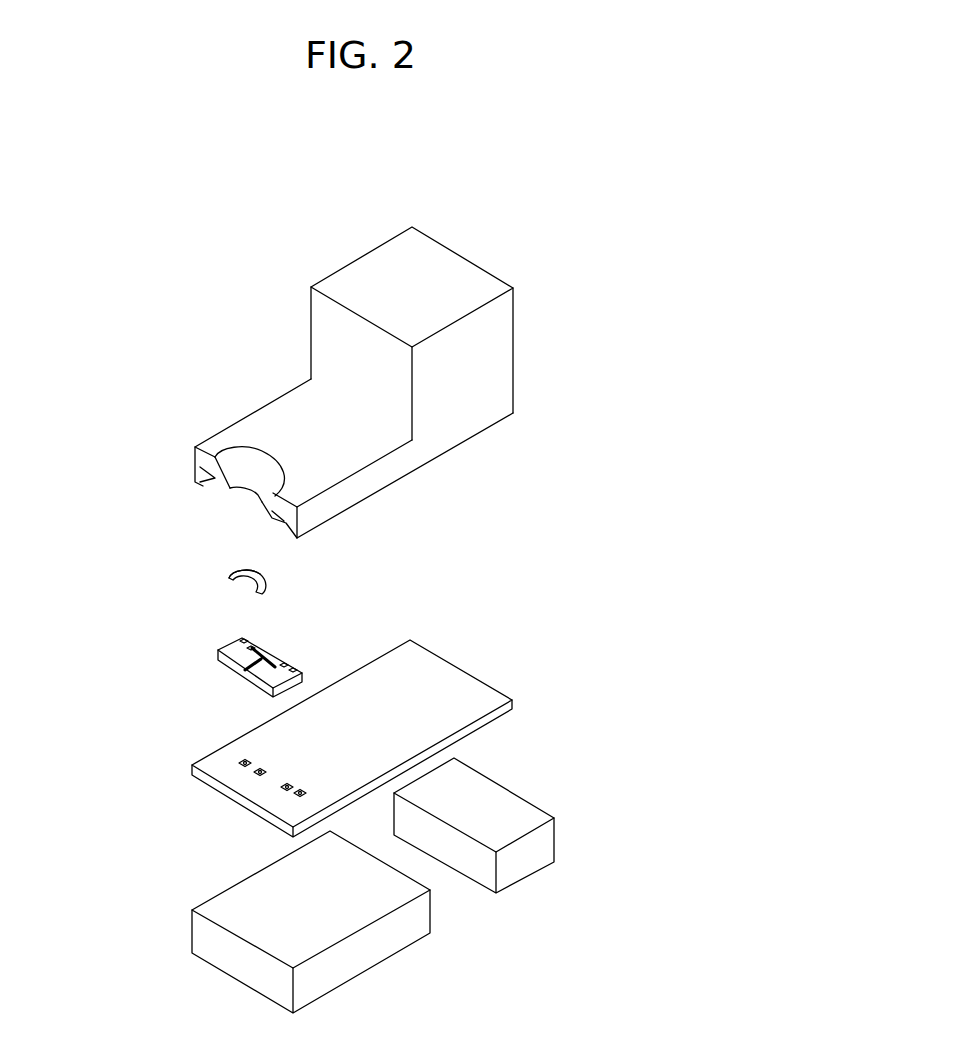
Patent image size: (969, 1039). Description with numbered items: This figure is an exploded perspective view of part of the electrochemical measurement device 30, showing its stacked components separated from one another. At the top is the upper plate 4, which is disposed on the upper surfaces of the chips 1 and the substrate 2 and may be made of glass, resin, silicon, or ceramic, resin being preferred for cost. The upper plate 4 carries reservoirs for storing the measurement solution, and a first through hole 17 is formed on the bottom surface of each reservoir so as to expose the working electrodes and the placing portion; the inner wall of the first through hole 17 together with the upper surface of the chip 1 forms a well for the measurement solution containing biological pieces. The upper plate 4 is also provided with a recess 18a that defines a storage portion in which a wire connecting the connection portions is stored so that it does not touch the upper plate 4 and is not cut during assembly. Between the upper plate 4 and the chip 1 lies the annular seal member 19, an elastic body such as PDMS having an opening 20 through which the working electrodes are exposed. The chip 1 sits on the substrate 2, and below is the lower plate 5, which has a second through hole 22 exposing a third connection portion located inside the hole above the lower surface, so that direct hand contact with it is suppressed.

The electrochemical measurement device 30 is at (558, 218).
The upper plate 4 is at (488, 395).
The recess 18a is at (207, 478).
The first through hole 17 is at (248, 498).
The annular seal member 19 is at (267, 578).
The opening 20 is at (248, 583).
The chip 1 is at (230, 655).
The substrate 2 is at (466, 692).
The lower plate 5 is at (517, 813).
The second through hole 22 is at (442, 883).